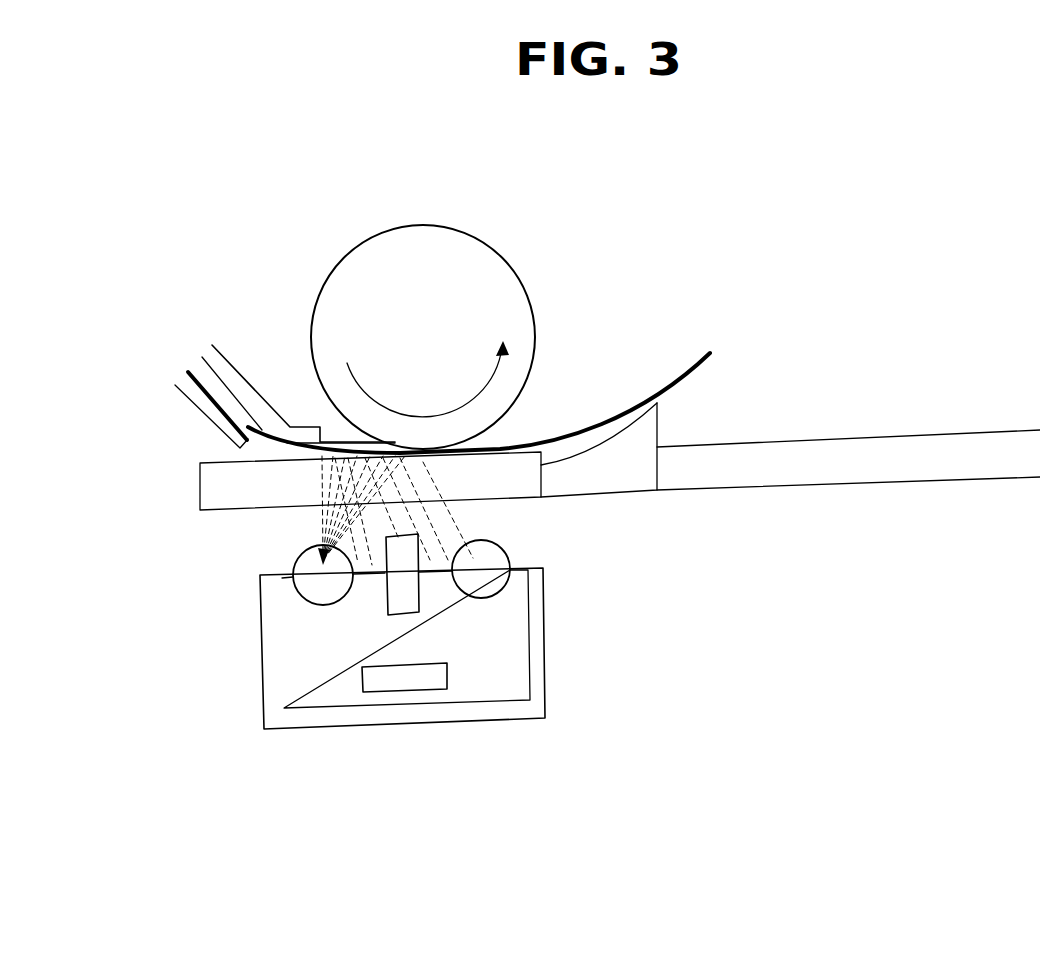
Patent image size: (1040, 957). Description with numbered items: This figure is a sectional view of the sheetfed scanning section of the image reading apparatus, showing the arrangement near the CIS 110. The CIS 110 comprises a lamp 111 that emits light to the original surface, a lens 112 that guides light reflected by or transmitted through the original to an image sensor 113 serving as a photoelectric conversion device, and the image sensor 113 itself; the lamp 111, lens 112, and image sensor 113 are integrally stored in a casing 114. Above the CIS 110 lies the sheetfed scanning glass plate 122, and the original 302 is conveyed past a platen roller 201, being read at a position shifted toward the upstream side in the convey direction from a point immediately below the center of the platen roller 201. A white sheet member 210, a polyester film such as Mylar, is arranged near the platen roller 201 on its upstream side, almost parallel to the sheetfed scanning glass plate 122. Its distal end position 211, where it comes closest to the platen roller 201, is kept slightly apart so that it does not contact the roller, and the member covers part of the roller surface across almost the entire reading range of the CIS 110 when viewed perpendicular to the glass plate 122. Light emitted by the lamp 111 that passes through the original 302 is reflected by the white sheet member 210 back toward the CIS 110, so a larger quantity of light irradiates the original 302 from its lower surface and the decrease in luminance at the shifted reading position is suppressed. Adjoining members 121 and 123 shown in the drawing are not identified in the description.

The platen roller 201 is at (476, 233).
The white sheet member 210 is at (370, 440).
The distal end position 211 is at (340, 440).
The original 302 is at (596, 432).
The conveying belt 121 is at (703, 445).
The sheetfed scanning glass plate 122 is at (200, 487).
The guide member 123 is at (590, 497).
The CIS 110 is at (368, 728).
The lamp 111 is at (487, 598).
The lens 112 is at (423, 612).
The image sensor 113 is at (362, 677).
The casing 114 is at (480, 725).